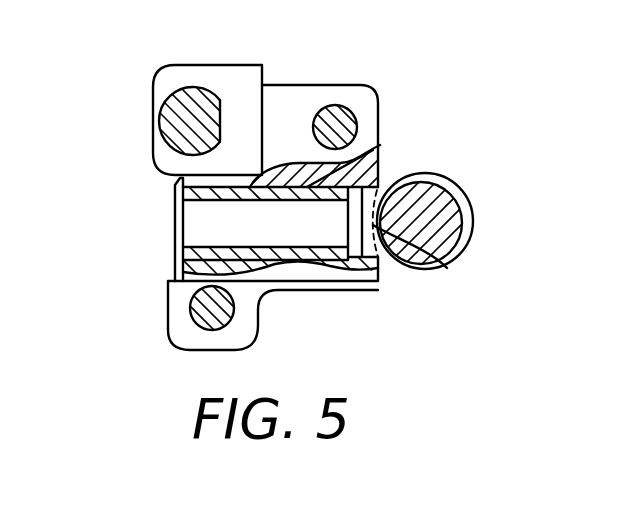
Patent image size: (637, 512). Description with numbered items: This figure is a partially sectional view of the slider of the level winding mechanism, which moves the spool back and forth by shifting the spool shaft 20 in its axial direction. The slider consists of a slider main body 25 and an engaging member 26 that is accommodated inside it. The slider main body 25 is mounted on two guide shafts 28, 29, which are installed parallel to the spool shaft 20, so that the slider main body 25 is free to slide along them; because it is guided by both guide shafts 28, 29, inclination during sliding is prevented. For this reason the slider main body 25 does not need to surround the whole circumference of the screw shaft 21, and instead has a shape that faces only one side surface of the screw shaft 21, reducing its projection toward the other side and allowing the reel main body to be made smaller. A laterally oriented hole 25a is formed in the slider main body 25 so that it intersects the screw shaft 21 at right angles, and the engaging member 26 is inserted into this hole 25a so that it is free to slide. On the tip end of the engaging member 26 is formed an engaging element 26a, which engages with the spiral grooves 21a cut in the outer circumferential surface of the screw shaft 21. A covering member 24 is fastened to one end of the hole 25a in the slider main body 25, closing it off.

The spool shaft 20 is at (205, 95).
The screw shaft 21 is at (423, 177).
The spiral grooves 21a is at (466, 203).
The covering member 24 is at (168, 266).
The slider main body 25 is at (333, 95).
The laterally oriented hole 25a is at (305, 240).
The engaging member 26 is at (380, 145).
The engaging element 26a is at (447, 268).
The guide shaft 28 is at (356, 111).
The guide shaft 29 is at (212, 317).